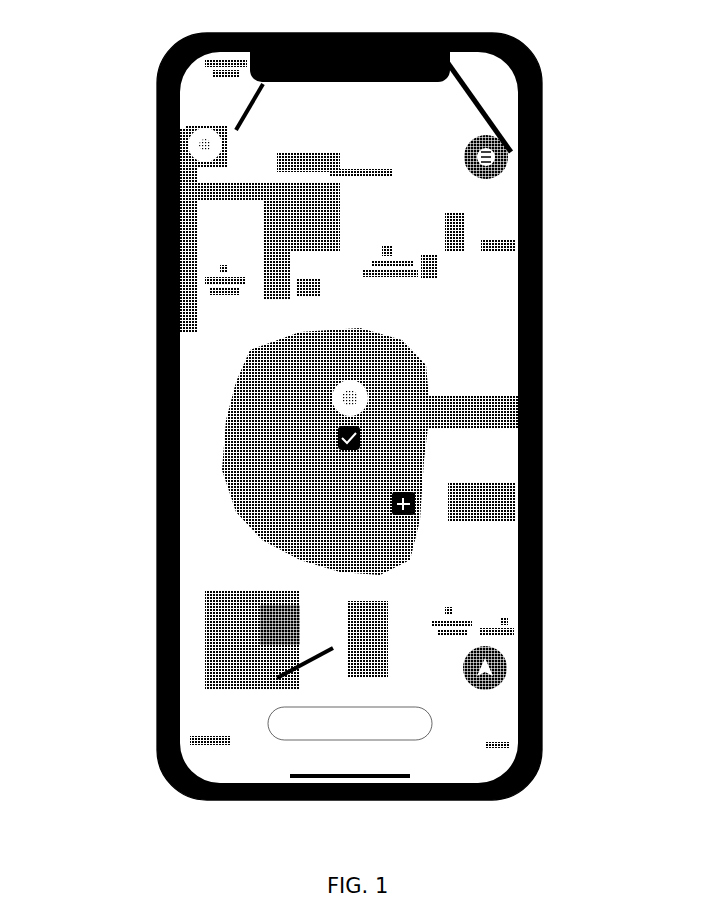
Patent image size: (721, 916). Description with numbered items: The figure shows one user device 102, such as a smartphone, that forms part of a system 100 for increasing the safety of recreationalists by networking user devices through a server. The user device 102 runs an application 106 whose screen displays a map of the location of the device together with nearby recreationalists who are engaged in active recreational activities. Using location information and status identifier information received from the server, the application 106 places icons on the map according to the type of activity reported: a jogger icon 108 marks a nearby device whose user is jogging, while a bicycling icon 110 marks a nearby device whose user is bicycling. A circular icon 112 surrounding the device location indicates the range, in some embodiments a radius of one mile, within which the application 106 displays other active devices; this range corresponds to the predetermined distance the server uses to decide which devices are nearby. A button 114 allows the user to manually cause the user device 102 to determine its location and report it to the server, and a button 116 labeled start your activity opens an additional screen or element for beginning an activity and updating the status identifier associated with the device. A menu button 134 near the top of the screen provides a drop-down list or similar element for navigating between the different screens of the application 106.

The system 100 is at (107, 114).
The user device 102 is at (158, 332).
The application 106 is at (232, 255).
The jogger icon 108 is at (336, 441).
The bicycling icon 110 is at (415, 497).
The circular icon 112 is at (422, 390).
The button 114 is at (508, 667).
The button 116 is at (425, 728).
The menu button 134 is at (507, 152).